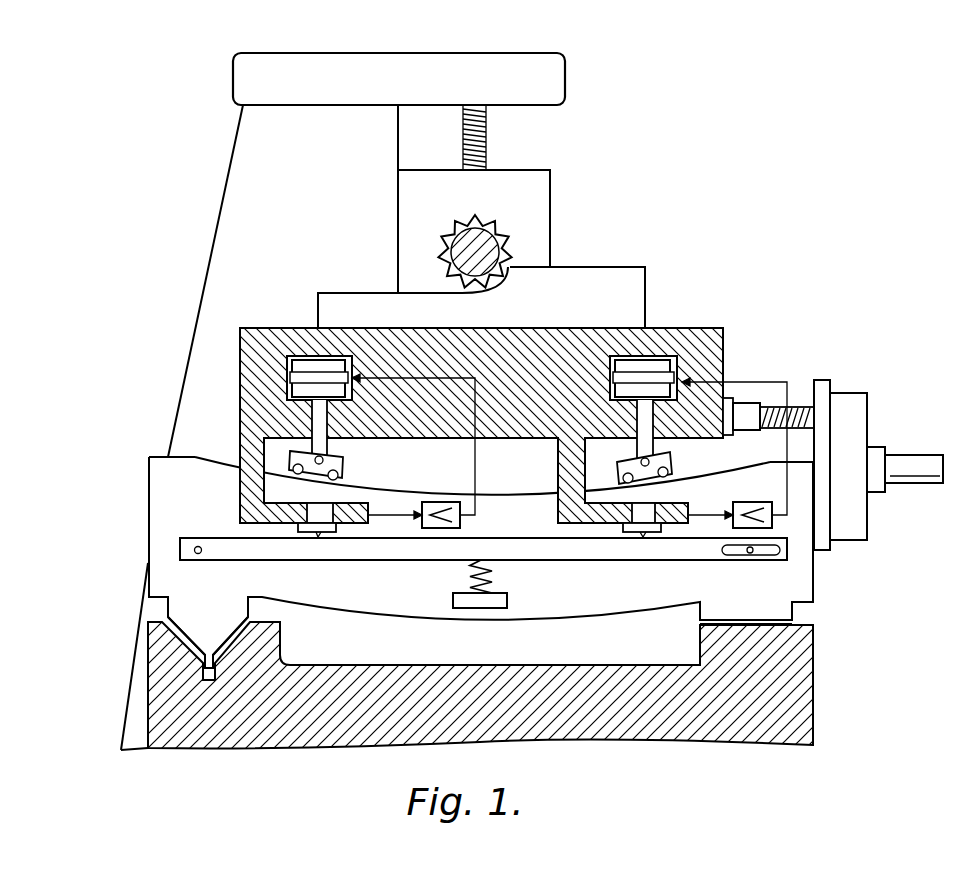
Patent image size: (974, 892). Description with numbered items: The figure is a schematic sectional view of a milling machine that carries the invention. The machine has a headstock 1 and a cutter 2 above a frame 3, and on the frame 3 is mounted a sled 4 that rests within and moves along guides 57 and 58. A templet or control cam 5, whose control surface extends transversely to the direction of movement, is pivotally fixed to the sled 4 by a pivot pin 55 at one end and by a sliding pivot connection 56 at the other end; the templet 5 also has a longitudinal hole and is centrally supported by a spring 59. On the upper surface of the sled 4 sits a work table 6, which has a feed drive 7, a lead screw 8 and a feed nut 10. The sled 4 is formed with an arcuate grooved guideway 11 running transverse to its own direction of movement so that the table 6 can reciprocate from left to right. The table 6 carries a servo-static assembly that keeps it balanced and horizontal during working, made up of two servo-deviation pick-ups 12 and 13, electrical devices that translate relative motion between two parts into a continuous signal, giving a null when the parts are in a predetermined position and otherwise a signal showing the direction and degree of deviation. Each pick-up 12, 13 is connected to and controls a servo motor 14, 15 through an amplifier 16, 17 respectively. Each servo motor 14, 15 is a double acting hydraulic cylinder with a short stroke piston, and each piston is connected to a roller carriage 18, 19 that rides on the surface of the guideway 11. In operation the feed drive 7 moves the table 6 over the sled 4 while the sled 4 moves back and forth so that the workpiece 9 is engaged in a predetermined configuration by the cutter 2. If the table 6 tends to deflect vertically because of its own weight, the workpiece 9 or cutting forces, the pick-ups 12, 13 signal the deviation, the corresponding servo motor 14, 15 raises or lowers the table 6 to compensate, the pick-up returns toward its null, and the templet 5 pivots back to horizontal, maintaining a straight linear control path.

The headstock 1 is at (540, 185).
The cutter 2 is at (462, 248).
The frame 3 is at (153, 647).
The sled 4 is at (162, 481).
The templet 5 is at (594, 556).
The work table 6 is at (722, 368).
The feed drive 7 is at (902, 456).
The lead screw 8 is at (793, 407).
The workpiece 9 is at (603, 273).
The feed nut 10 is at (752, 400).
The arcuate grooved guideway 11 is at (727, 468).
The servo-deviation pick-up 12 is at (318, 520).
The servo-deviation pick-up 13 is at (652, 528).
The servo motor 14 is at (290, 366).
The servo motor 15 is at (665, 367).
The amplifier 16 is at (432, 528).
The amplifier 17 is at (735, 527).
The roller carriage 18 is at (290, 455).
The roller carriage 19 is at (670, 463).
The pivot pin 55 is at (194, 550).
The sliding pivot connection 56 is at (757, 553).
The guide 57 is at (240, 645).
The guide 58 is at (795, 630).
The spring 59 is at (480, 608).